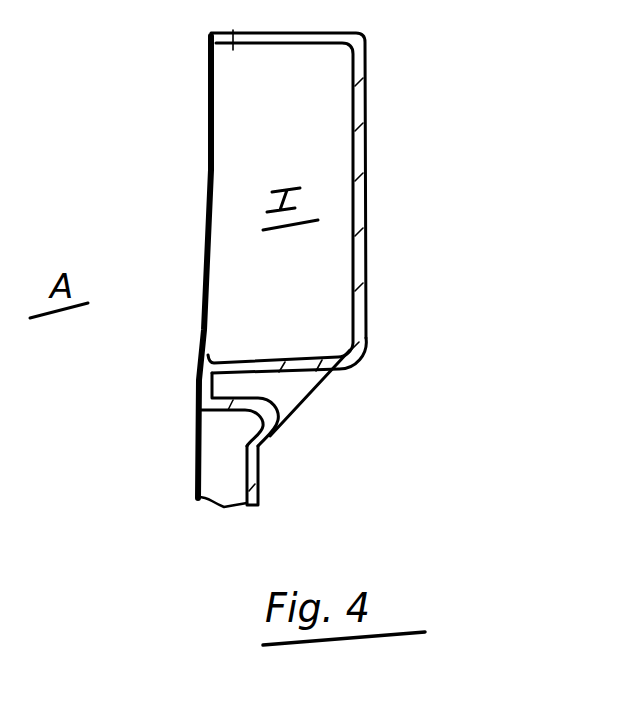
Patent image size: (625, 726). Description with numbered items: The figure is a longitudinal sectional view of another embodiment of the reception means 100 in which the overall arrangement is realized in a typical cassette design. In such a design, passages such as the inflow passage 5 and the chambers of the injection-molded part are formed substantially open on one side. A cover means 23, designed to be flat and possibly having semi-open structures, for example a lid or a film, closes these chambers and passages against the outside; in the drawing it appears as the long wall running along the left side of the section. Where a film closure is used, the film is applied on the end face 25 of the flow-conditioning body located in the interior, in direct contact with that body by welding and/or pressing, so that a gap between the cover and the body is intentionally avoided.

The reception means 100 is at (415, 178).
The cover means 23 is at (208, 182).
The end face 25 is at (201, 392).
The inflow passage 5 is at (258, 472).